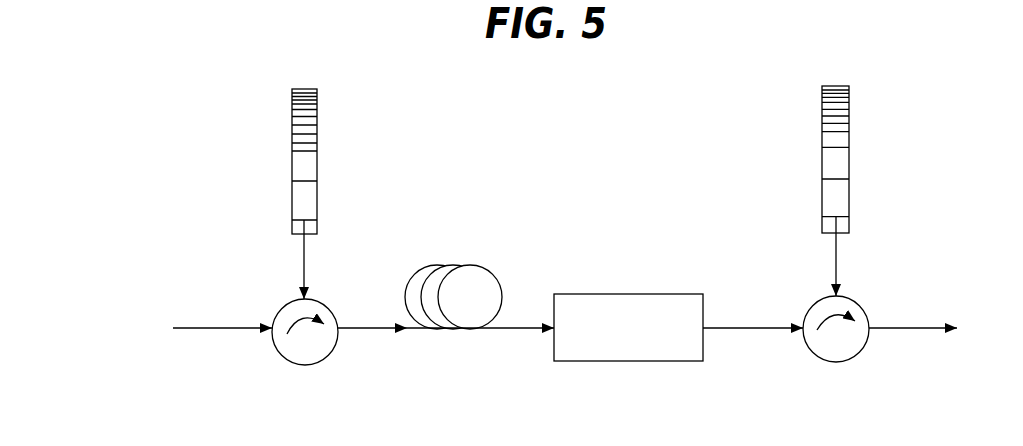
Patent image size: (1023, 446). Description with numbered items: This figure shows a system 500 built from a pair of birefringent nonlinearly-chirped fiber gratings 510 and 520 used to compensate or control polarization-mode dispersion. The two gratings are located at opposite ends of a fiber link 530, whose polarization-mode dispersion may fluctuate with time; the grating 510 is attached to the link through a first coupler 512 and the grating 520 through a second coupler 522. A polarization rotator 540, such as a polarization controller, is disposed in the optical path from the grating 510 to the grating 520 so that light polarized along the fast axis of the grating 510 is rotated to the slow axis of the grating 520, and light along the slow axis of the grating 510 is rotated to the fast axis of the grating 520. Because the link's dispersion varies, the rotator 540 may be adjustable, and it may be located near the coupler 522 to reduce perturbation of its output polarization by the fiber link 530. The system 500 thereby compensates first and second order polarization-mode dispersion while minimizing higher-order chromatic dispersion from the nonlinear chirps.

The system 500 is at (168, 138).
The birefringent nonlinearly-chirped fiber grating 510 is at (318, 140).
The first optical circulator 512 is at (281, 354).
The birefringent nonlinearly-chirped fiber grating 520 is at (849, 159).
The coupler 522 is at (811, 355).
The fiber link 530 is at (468, 330).
The polarization rotator 540 is at (628, 361).